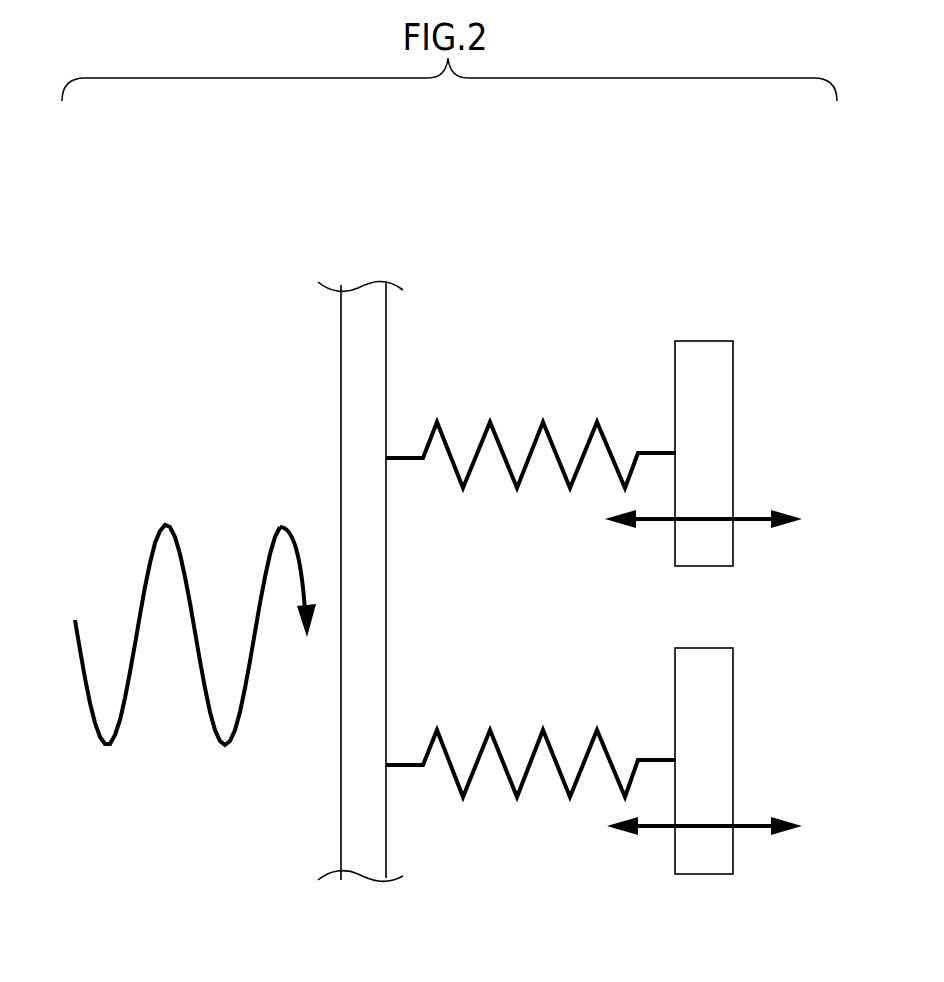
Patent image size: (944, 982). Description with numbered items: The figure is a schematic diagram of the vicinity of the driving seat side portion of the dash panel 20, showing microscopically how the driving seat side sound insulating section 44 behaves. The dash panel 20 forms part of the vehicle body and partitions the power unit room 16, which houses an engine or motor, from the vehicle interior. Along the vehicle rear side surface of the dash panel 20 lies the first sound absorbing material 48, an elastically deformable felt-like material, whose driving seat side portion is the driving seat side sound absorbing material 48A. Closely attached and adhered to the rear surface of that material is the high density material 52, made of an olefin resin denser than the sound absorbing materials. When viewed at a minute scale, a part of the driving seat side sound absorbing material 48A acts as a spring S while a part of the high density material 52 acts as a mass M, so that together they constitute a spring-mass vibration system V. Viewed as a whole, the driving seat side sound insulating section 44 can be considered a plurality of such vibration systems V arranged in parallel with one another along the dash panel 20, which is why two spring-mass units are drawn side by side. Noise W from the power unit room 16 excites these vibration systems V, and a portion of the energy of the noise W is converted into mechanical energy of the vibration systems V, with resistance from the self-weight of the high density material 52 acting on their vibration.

The power unit room 16 is at (168, 283).
The dash panel 20 is at (355, 342).
The driving seat side sound insulating section 44 is at (712, 248).
The driving seat side sound absorbing material 48A is at (515, 293).
The first sound absorbing material 48 is at (531, 478).
The high density material 52 is at (770, 335).
The noise W is at (162, 522).
The spring S is at (497, 431).
The mass M is at (720, 412).
The vibration system V is at (622, 333).